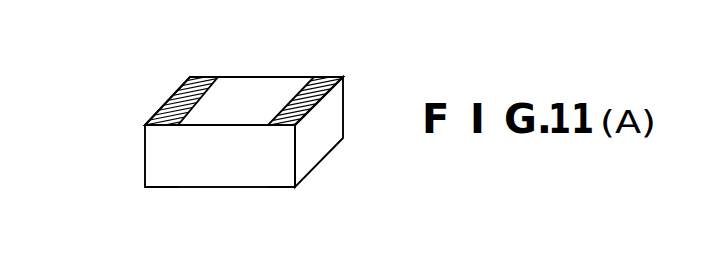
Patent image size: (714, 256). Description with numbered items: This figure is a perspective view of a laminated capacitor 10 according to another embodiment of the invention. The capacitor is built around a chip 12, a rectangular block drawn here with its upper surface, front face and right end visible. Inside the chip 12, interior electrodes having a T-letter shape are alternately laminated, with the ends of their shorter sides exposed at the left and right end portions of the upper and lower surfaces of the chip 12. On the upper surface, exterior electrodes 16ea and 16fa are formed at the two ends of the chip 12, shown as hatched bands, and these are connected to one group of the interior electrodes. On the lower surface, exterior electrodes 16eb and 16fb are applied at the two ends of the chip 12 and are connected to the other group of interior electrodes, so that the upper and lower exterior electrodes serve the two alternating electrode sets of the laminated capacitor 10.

The laminated capacitor 10 is at (53, 42).
The chip 12 is at (312, 144).
The exterior electrode 16ea is at (174, 92).
The exterior electrode 16eb is at (161, 188).
The exterior electrode 16fa is at (326, 74).
The exterior electrode 16fb is at (280, 188).